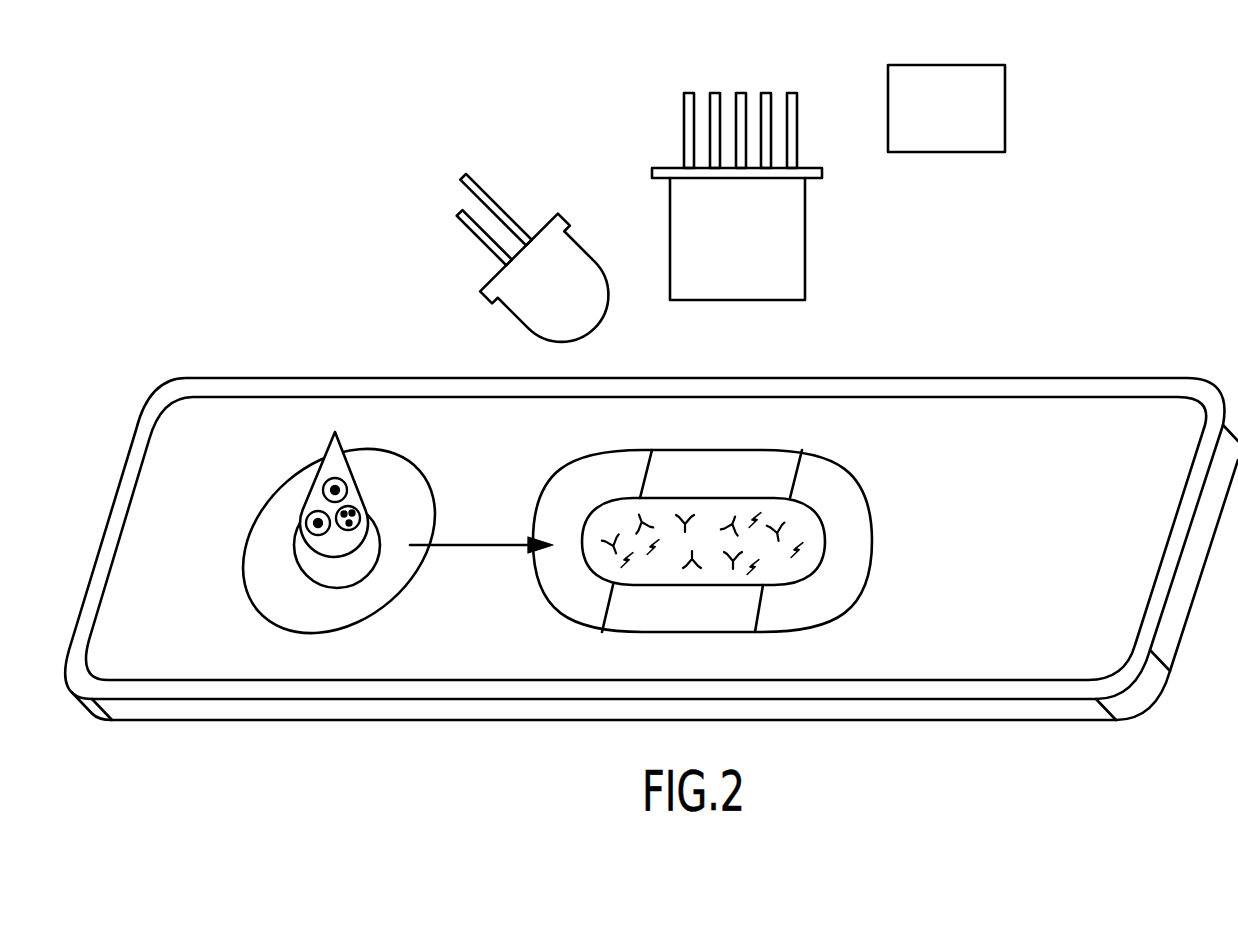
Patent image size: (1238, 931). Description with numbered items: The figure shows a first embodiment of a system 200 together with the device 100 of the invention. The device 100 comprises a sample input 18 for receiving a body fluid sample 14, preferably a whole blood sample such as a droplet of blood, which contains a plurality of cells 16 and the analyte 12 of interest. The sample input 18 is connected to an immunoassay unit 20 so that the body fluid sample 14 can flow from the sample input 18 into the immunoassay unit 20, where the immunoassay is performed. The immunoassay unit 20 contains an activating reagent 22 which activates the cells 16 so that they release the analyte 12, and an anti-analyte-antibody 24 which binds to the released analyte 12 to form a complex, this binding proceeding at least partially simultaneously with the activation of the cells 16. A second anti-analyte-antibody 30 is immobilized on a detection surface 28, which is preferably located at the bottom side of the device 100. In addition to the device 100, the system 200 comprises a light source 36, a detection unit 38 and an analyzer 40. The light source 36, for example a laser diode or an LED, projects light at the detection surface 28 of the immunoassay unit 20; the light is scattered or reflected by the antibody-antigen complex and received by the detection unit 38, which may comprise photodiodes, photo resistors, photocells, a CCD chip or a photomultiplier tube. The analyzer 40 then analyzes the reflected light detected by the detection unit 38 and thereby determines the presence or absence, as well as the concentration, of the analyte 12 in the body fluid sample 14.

The analyte 12 is at (306, 523).
The body fluid sample 14 is at (332, 450).
The cells 16 is at (323, 489).
The sample input 18 is at (350, 570).
The immunoassay unit 20 is at (713, 538).
The activating reagent 22 is at (803, 535).
The anti-analyte-antibody 24 is at (683, 563).
The detection surface 28 is at (613, 518).
The second anti-analyte-antibody 30 is at (692, 518).
The light source 36 is at (585, 246).
The detection unit 38 is at (805, 262).
The analyzer 40 is at (1005, 107).
The device 100 is at (1163, 338).
The system 200 is at (677, 211).